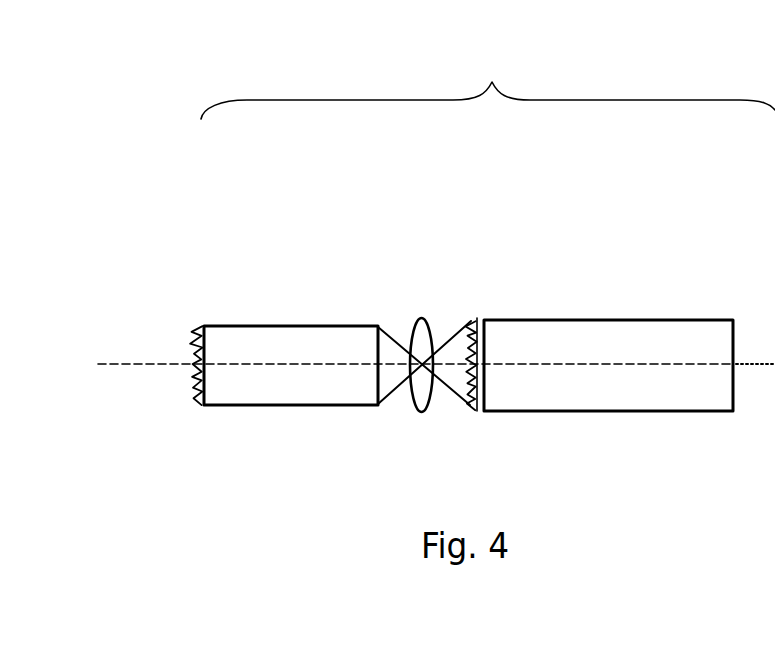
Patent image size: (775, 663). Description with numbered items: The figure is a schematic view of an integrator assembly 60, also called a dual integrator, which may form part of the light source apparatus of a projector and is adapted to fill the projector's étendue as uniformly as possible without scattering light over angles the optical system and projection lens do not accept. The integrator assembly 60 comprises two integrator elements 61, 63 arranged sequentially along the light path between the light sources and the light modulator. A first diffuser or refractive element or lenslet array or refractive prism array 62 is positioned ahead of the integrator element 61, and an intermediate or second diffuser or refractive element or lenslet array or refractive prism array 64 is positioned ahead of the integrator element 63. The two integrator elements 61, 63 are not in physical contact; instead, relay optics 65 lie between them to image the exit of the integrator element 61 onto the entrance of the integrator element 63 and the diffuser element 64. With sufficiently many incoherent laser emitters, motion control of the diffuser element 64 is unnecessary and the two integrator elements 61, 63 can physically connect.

The integrator assembly 60 is at (488, 78).
The integrator element 61 is at (310, 323).
The first diffuser 62 is at (205, 326).
The integrator element 63 is at (677, 308).
The second diffuser 64 is at (476, 318).
The relay optics 65 is at (420, 305).